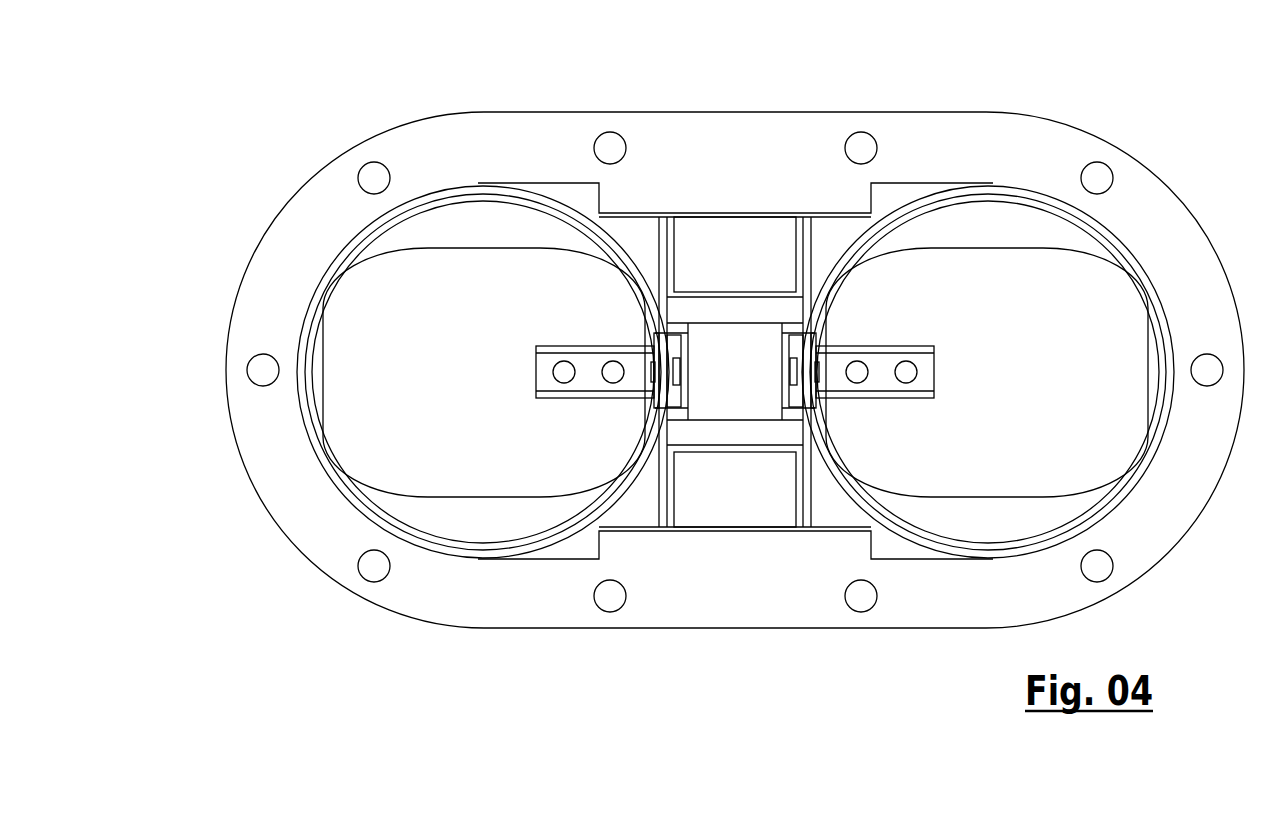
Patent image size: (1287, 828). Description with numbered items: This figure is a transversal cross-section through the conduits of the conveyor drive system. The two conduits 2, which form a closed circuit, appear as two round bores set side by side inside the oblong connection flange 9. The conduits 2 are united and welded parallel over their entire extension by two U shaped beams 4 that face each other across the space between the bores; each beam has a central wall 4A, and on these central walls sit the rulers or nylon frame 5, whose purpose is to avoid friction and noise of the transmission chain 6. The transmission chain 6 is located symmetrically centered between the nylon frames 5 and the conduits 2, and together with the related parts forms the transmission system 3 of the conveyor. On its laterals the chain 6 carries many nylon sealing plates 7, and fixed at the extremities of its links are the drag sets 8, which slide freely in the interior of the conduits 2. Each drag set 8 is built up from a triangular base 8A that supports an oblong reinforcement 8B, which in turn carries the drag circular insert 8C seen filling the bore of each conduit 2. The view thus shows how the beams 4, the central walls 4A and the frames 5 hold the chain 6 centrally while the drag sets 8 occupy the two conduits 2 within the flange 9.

The conduits 2 is at (333, 272).
The transmission system 3 is at (668, 388).
The U shaped beams 4 is at (668, 220).
The central wall 4A is at (713, 290).
The nylon frame 5 is at (738, 310).
The transmission chain 6 is at (737, 385).
The nylon sealing plates 7 is at (675, 350).
The drag sets 8 is at (592, 398).
The triangular base 8A is at (865, 373).
The oblong reinforcement 8B is at (968, 283).
The drag circular insert 8C is at (1068, 238).
The oblong connection flange 9 is at (332, 193).